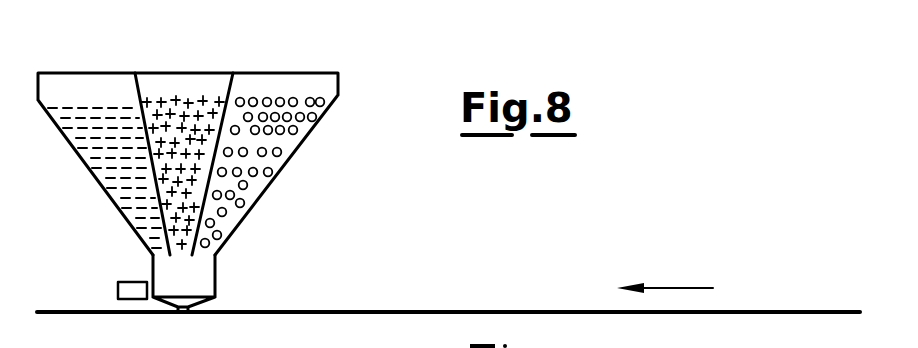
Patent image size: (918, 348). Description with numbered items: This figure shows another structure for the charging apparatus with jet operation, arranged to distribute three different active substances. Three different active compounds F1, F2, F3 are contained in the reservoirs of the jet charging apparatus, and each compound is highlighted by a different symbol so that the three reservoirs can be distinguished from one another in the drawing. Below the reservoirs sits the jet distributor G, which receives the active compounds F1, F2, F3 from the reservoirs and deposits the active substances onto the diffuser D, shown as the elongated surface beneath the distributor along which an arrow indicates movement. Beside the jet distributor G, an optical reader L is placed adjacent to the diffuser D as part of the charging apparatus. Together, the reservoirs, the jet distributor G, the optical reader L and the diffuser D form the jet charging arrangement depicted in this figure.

The first active compound F1 is at (82, 105).
The second active compound F2 is at (186, 105).
The third active compound F3 is at (279, 102).
The jet distributor G is at (203, 276).
The optical reader L is at (132, 282).
The diffuser D is at (82, 314).